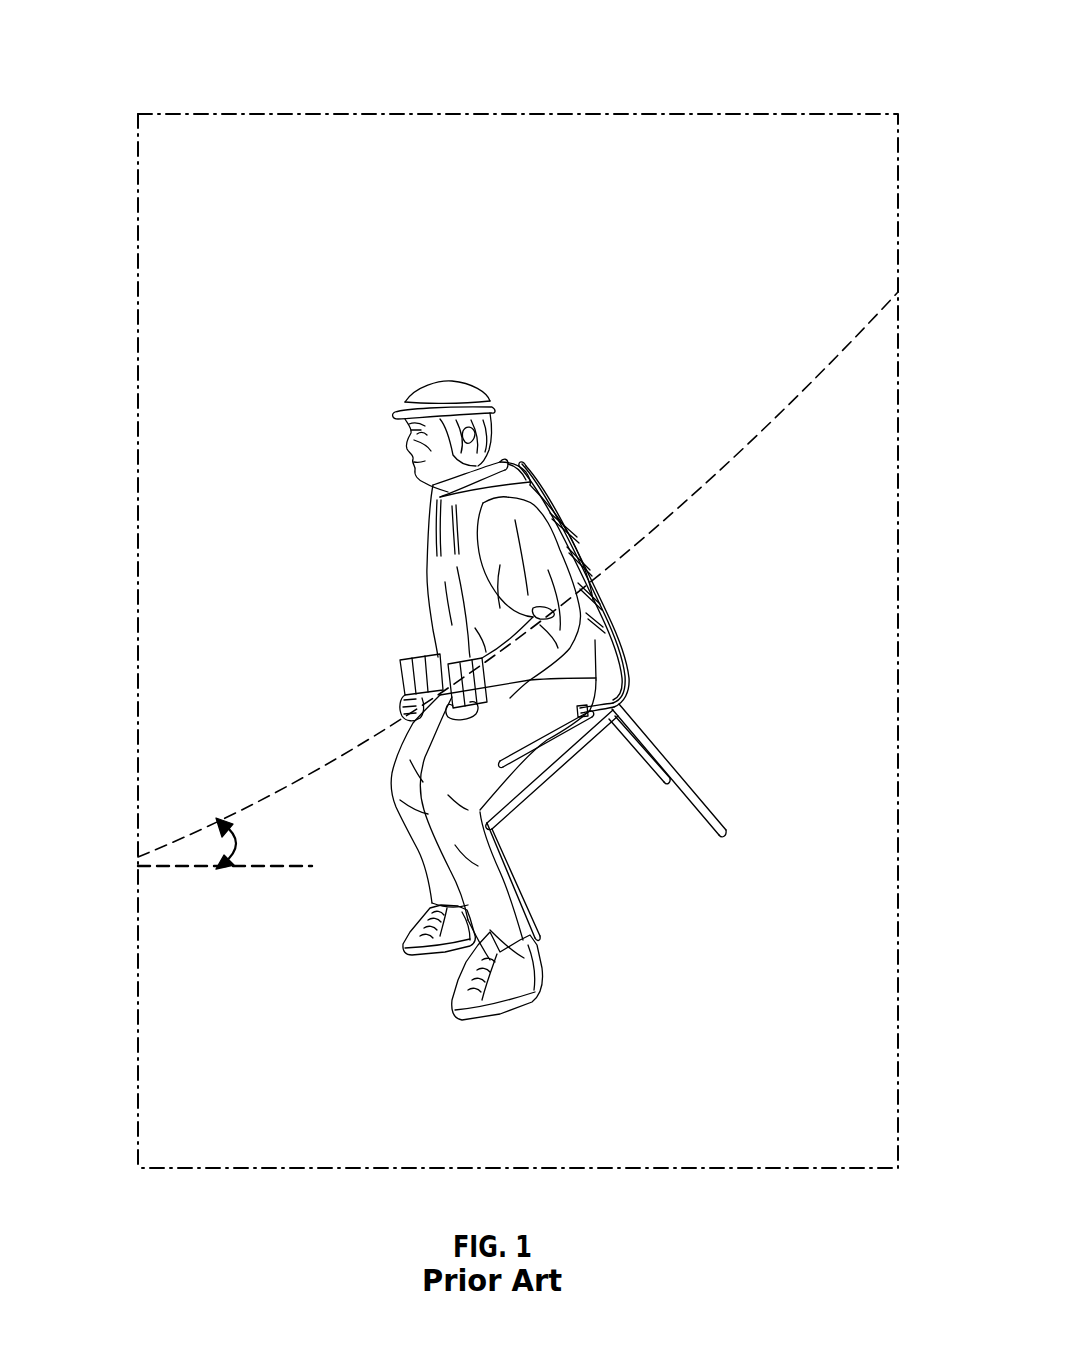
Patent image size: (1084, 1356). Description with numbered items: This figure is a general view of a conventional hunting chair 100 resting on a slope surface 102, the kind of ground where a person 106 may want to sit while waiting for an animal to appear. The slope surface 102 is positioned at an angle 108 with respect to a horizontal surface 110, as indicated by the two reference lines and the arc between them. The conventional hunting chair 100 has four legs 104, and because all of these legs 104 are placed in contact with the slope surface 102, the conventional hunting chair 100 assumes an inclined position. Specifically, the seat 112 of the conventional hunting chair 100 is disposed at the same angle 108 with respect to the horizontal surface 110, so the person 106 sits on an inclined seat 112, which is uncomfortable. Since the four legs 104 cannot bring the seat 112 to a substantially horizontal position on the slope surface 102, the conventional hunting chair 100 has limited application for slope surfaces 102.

The conventional hunting chair 100 is at (877, 90).
The slope surface 102 is at (148, 885).
The legs 104 is at (543, 911).
The person 106 is at (489, 573).
The angle 108 is at (243, 841).
The horizontal surface 110 is at (292, 868).
The seat 112 is at (557, 736).